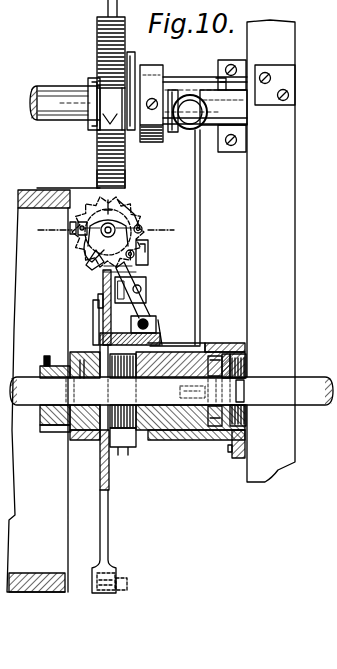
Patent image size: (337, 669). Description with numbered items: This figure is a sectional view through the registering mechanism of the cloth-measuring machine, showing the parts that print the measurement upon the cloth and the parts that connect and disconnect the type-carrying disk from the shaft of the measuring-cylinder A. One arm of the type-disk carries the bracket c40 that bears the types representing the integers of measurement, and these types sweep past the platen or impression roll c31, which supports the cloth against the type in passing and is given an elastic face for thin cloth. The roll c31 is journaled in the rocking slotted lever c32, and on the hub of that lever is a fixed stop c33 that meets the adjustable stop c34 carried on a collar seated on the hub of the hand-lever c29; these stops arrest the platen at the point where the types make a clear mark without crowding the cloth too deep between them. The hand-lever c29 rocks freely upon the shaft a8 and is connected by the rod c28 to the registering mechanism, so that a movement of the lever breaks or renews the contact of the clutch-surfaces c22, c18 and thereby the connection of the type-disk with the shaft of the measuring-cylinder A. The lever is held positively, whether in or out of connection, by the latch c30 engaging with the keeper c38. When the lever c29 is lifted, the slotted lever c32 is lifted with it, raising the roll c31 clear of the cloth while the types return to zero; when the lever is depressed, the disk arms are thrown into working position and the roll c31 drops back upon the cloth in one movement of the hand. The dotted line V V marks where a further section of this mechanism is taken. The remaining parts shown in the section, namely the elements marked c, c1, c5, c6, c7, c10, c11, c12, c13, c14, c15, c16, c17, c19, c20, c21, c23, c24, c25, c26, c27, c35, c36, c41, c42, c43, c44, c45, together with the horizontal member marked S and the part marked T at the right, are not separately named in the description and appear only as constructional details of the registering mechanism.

The table T is at (271, 251).
The measuring-cylinder A is at (53, 390).
The shaft S is at (171, 391).
The section line V V is at (104, 231).
The shaft a8 is at (38, 86).
The rod c is at (100, 480).
The pawl c1 is at (136, 212).
The arm c5 is at (78, 244).
The stop c6 is at (78, 226).
The ratchet wheel c7 is at (96, 216).
The pin c10 is at (115, 212).
The pin c11 is at (144, 239).
The lever c12 is at (138, 264).
The pivot pin c13 is at (143, 229).
The block c14 is at (149, 316).
The bracket c15 is at (148, 252).
The link c16 is at (146, 290).
The plate c17 is at (156, 326).
The clutch-surface c18 is at (166, 332).
The gear c19 is at (135, 447).
The bearing cap c20 is at (96, 352).
The collar c21 is at (187, 111).
The clutch-surface c22 is at (70, 428).
The sleeve c23 is at (185, 348).
The nut c24 is at (238, 350).
The key c25 is at (235, 395).
The ring c26 is at (170, 440).
The plate c27 is at (210, 346).
The rod c28 is at (204, 250).
The hand-lever c29 is at (100, 436).
The latch c30 is at (205, 84).
The platen or impression roll c31 is at (97, 165).
The rocking slotted lever c32 is at (88, 84).
The fixed stop c33 is at (135, 70).
The adjustable stop c34 is at (157, 67).
The shaft c35 is at (97, 184).
The bracket c36 is at (256, 106).
The keeper c38 is at (232, 452).
The bracket c40 is at (86, 265).
The post c41 is at (103, 282).
The washer c42 is at (244, 368).
The rod c43 is at (96, 328).
The plate c44 is at (62, 432).
The key c45 is at (244, 396).